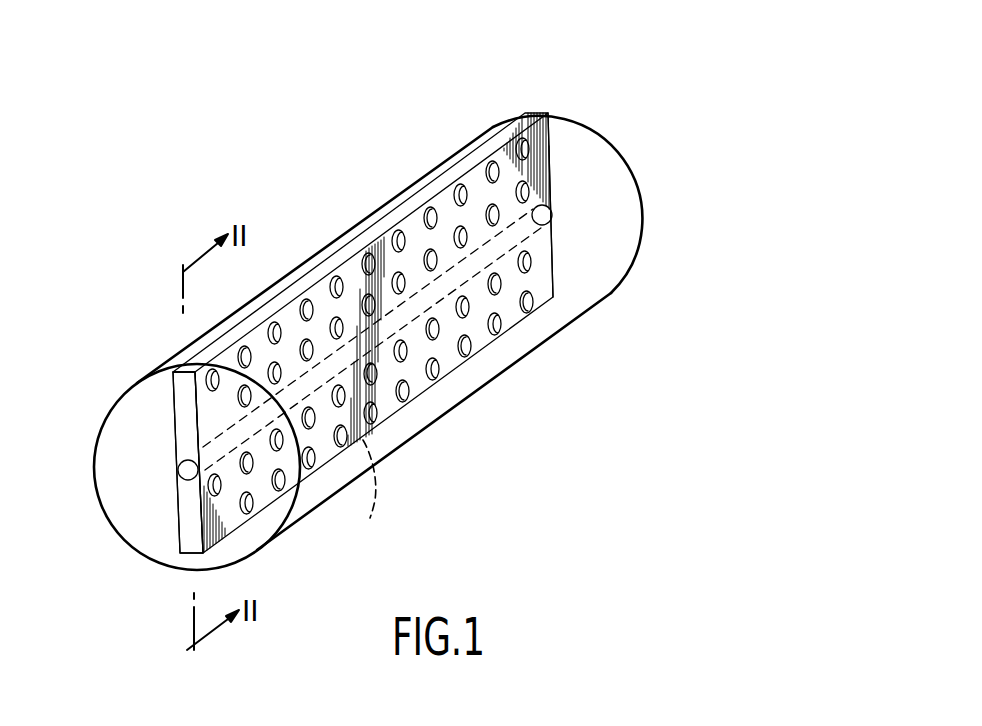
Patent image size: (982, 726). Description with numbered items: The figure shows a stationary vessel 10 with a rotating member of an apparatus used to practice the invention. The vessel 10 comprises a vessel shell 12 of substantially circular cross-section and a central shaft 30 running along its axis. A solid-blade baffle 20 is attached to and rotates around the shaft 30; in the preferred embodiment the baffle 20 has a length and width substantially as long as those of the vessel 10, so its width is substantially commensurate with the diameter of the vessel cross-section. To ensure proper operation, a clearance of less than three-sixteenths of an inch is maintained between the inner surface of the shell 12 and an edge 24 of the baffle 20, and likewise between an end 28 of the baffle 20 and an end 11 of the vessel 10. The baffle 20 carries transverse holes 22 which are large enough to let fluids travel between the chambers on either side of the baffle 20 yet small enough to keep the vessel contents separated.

The stationary vessel 10 is at (432, 320).
The end of the vessel 11 is at (645, 160).
The vessel shell 12 is at (341, 303).
The solid-blade baffle 20 is at (352, 320).
The transverse holes 22 is at (456, 197).
The edge of the baffle 24 is at (170, 369).
The end of the baffle 28 is at (188, 526).
The central shaft 30 is at (365, 497).